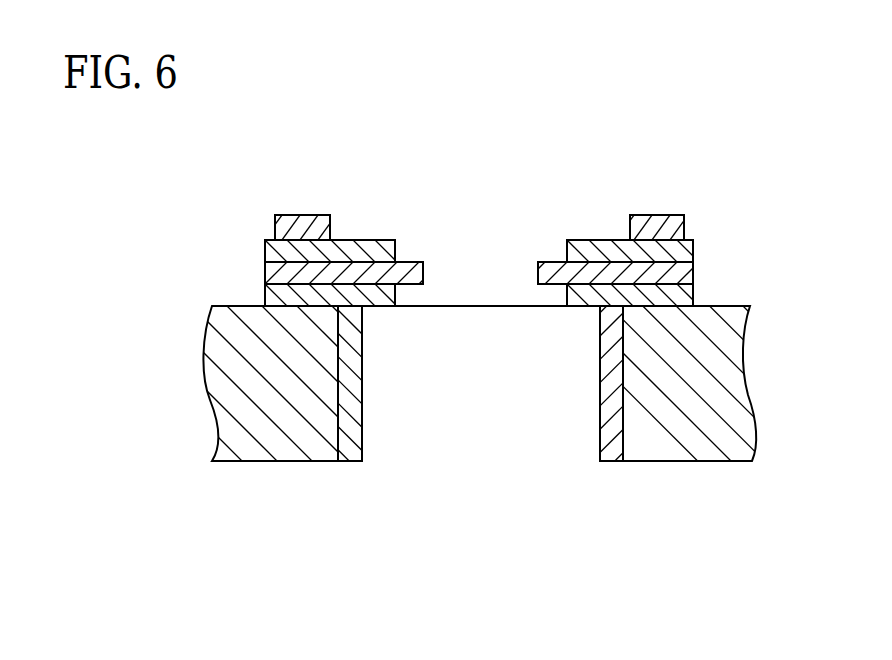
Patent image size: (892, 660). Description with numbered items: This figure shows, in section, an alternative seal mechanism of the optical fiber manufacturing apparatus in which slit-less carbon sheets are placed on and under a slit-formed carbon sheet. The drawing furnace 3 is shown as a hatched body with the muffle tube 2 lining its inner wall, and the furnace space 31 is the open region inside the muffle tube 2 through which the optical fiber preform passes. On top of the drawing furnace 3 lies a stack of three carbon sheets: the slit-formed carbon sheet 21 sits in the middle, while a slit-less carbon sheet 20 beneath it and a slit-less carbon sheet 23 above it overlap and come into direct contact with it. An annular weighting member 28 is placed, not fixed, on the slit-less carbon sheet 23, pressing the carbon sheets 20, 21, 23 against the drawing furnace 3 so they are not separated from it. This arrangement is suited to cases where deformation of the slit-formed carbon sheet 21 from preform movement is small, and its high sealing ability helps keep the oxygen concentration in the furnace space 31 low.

The muffle tube 2 is at (350, 450).
The drawing furnace 3 is at (252, 378).
The slit-less carbon sheet 20 is at (278, 297).
The slit-formed carbon sheet 21 is at (275, 272).
The slit-less carbon sheet 23 is at (275, 250).
The annular weighting member 28 is at (302, 222).
The furnace space 31 is at (473, 425).